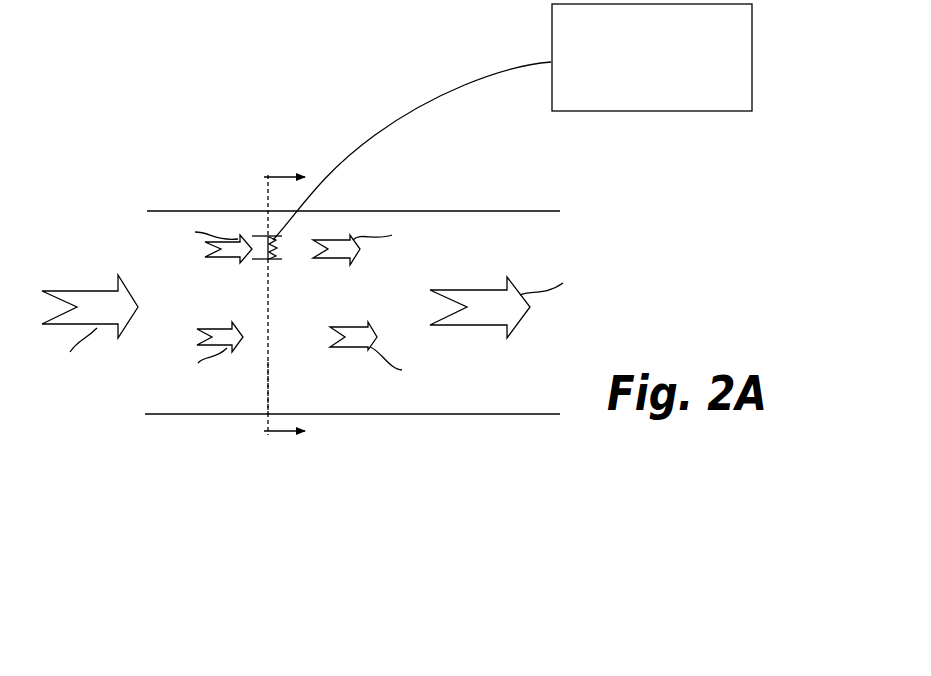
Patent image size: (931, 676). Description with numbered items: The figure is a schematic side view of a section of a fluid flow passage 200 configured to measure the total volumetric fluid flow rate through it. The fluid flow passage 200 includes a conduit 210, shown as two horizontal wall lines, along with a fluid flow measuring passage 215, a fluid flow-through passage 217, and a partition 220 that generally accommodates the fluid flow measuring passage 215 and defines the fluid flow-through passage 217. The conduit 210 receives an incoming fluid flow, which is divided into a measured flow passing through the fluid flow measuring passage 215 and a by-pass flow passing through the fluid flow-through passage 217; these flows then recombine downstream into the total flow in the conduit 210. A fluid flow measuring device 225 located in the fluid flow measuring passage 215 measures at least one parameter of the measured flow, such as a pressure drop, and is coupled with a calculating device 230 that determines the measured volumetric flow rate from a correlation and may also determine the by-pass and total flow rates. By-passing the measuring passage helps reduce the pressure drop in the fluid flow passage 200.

The fluid flow passage 200 is at (325, 72).
The conduit 210 is at (553, 210).
The fluid flow measuring passage 215 is at (262, 236).
The fluid flow-through passage 217 is at (268, 362).
The partition 220 is at (268, 275).
The fluid flow measuring device 225 is at (278, 250).
The calculating device 230 is at (752, 46).